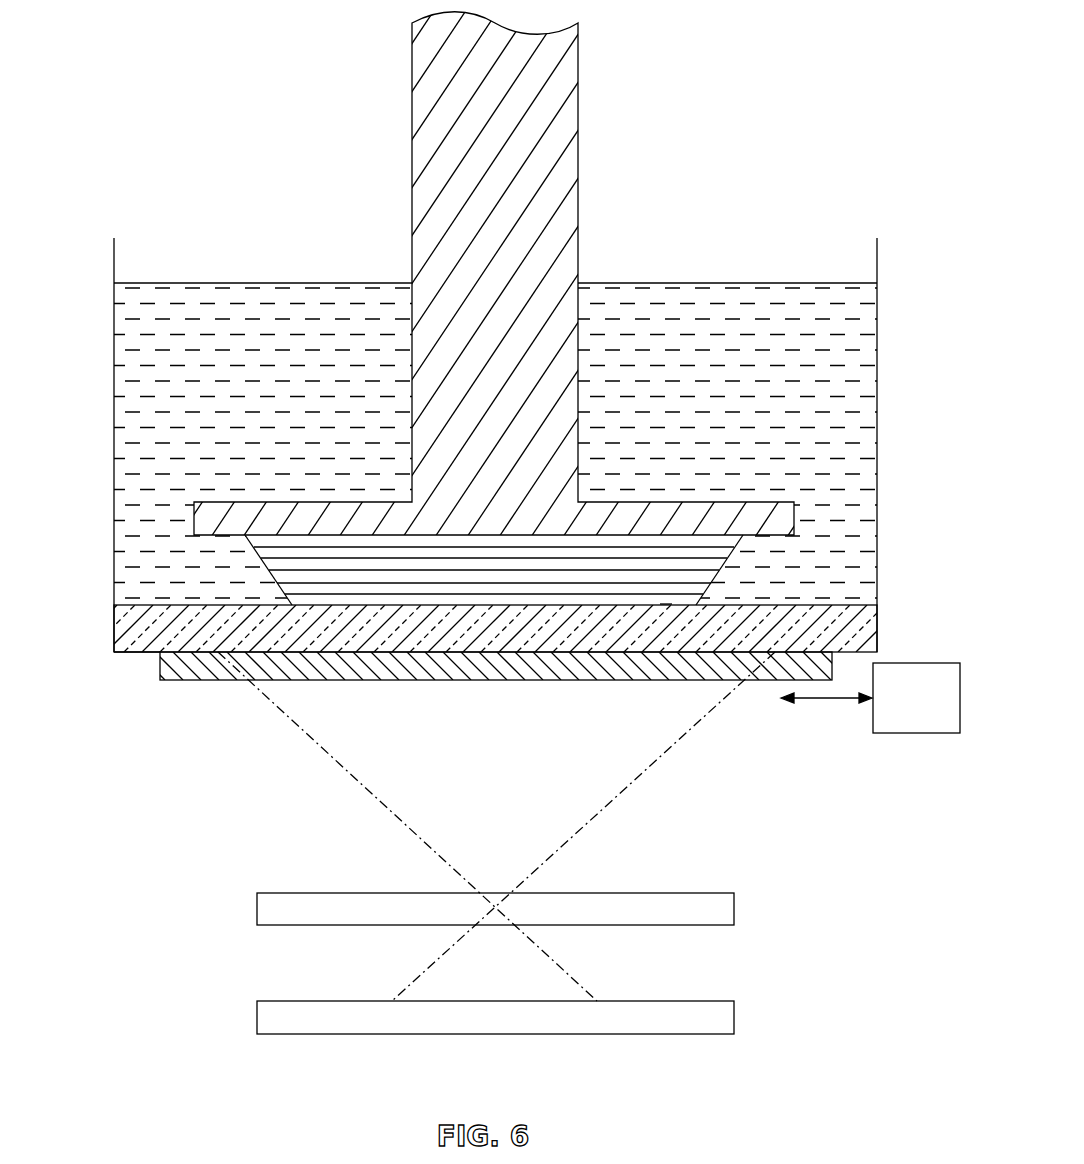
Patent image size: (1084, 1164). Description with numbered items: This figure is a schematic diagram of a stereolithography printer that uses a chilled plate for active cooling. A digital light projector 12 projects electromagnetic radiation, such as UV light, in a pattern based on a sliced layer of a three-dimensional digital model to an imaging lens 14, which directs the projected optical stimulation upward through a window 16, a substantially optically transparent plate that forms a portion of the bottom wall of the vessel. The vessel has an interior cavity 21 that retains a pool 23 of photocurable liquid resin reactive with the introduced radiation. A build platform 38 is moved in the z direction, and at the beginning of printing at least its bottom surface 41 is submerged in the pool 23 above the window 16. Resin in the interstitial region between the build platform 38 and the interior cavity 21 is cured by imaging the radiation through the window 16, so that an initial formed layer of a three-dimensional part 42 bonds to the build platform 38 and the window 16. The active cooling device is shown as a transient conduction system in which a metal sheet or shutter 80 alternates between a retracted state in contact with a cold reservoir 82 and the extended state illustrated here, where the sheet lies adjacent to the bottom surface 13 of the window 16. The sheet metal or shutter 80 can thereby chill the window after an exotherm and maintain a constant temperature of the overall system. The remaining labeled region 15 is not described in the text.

The digital light projector 12 is at (735, 1013).
The bottom surface of the window 13 is at (138, 652).
The imaging lens 14 is at (735, 905).
The gap region 15 is at (137, 603).
The window 16 is at (120, 637).
The interior cavity 21 is at (114, 395).
The pool 23 is at (130, 330).
The build platform 38 is at (783, 503).
The bottom surface 41 is at (765, 535).
The 3D part 42 is at (665, 603).
The metal sheet or shutter 80 is at (758, 680).
The cold reservoir 82 is at (918, 733).